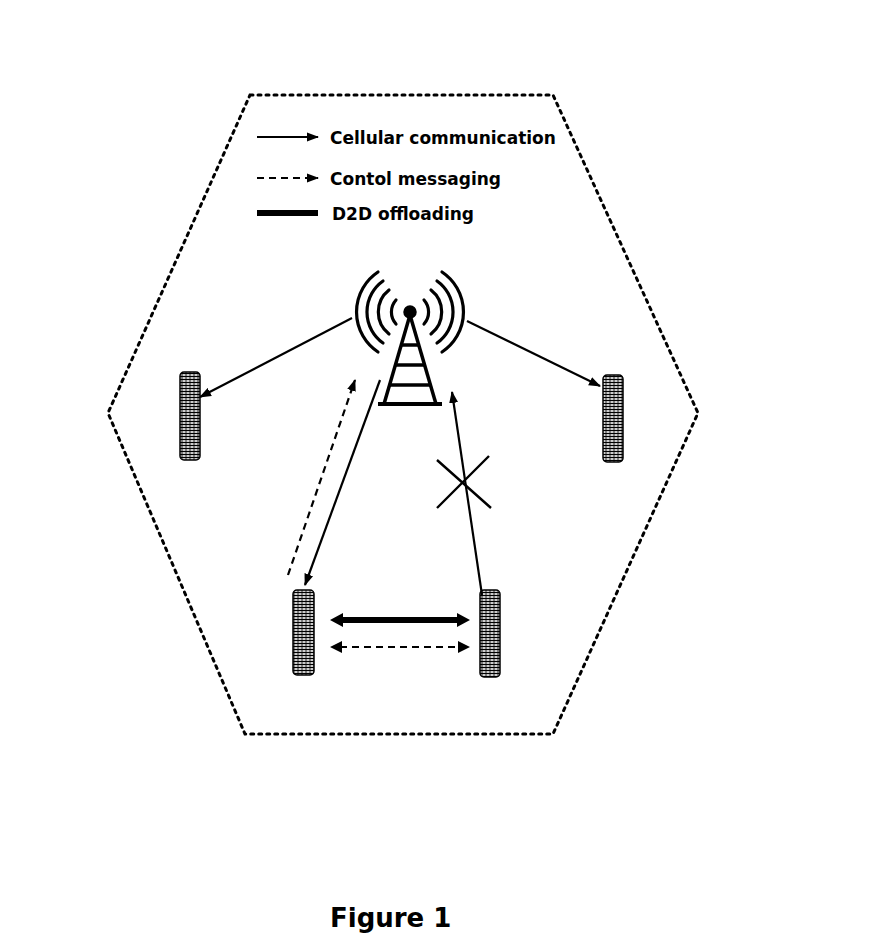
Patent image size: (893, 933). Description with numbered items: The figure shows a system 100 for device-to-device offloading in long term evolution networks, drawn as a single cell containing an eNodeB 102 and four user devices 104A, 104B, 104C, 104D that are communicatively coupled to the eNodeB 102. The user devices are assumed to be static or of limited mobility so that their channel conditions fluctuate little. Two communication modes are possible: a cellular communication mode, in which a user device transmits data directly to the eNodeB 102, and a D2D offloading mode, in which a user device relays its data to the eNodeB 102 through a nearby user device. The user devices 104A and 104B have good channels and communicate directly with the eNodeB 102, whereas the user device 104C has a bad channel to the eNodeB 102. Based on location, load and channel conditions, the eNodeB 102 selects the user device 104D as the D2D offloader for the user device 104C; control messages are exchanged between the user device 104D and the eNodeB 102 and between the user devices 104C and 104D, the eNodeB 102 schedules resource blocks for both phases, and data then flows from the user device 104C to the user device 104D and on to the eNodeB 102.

The system 100 is at (408, 94).
The eNodeB 102 is at (416, 404).
The user device 104A is at (196, 460).
The user device 104B is at (622, 405).
The user device 104C is at (497, 677).
The user device 104D is at (313, 675).